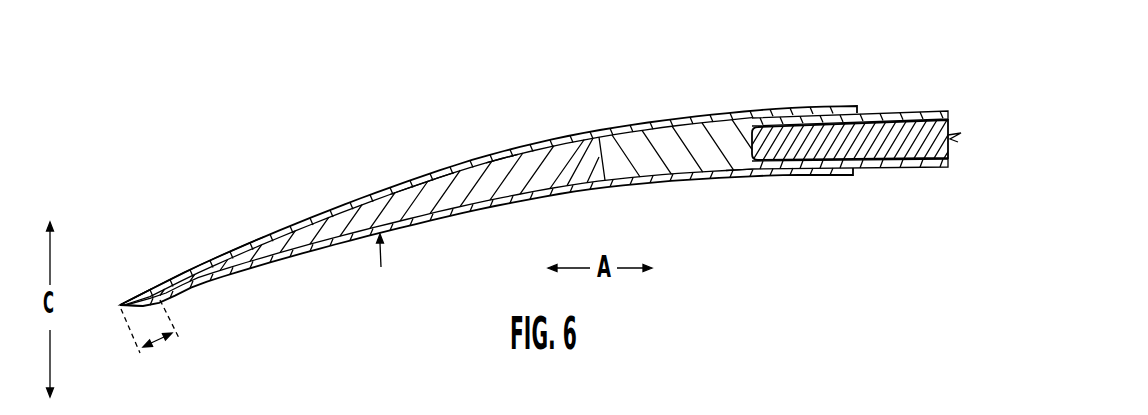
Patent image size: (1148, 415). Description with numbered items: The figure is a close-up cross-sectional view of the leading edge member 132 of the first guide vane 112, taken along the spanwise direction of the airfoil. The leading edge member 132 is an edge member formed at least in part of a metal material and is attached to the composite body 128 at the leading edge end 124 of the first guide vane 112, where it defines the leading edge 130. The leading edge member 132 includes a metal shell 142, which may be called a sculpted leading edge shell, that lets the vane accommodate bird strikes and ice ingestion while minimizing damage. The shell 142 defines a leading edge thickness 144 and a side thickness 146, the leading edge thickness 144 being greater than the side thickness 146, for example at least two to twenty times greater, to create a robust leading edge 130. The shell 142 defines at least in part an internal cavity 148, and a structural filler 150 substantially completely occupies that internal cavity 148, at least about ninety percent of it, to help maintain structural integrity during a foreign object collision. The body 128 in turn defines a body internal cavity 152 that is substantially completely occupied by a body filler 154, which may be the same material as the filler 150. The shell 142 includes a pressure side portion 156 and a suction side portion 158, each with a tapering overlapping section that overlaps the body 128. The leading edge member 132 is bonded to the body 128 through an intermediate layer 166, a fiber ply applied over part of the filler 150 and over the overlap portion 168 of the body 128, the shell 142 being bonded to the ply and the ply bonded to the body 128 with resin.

The first guide vane 112 is at (510, 70).
The leading edge end 124 is at (124, 256).
The body 128 is at (893, 114).
The leading edge 130 is at (108, 315).
The leading edge member 132 is at (352, 165).
The shell 142 is at (455, 163).
The leading edge thickness 144 is at (158, 341).
The side thickness 146 is at (384, 259).
The internal cavity 148 is at (415, 175).
The filler 150 is at (522, 186).
The body internal cavity 152 is at (899, 162).
The body filler 154 is at (920, 136).
The pressure side portion 156 is at (357, 236).
The suction side portion 158 is at (548, 138).
The intermediate layer 166 is at (505, 150).
The overlap portion 168 is at (700, 199).